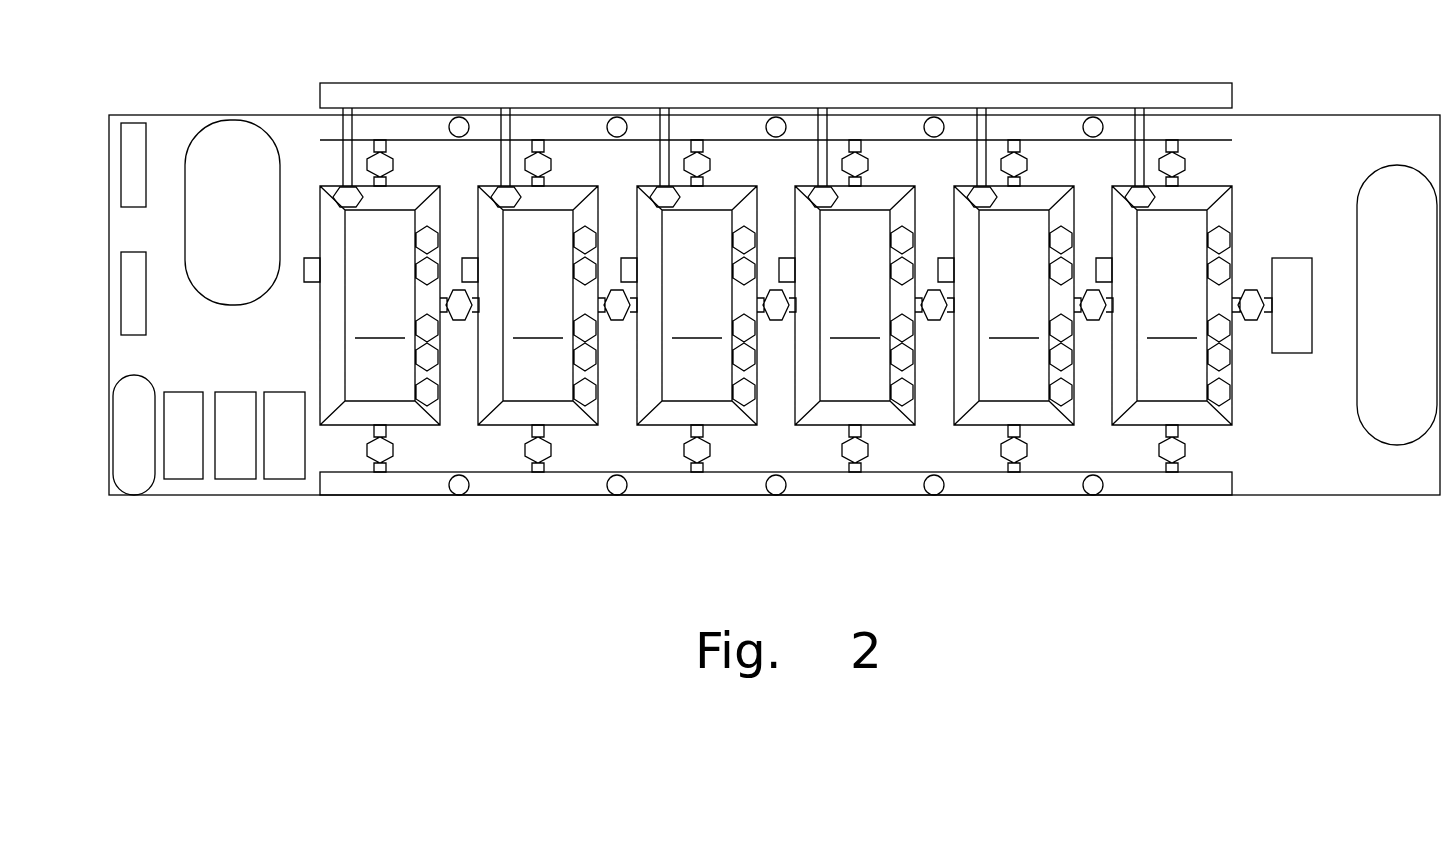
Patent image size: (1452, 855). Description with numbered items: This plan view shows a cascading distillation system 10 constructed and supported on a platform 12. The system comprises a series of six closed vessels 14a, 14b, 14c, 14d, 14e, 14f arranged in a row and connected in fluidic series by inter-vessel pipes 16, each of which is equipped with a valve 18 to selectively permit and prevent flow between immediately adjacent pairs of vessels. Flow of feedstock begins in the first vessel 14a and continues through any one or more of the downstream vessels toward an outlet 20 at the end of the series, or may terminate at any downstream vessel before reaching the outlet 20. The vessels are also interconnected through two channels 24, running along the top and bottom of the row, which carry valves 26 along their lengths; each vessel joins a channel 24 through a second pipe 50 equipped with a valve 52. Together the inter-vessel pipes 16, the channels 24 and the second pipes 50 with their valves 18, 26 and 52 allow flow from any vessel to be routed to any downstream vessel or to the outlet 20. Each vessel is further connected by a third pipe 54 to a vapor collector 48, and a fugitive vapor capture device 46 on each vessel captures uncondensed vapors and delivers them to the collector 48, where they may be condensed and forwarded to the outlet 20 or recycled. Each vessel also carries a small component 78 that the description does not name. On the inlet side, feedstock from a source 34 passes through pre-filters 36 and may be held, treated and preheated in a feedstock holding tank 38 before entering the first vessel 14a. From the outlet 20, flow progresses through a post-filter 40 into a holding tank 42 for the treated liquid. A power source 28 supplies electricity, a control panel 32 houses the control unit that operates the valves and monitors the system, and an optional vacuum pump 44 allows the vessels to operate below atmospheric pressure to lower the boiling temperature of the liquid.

The cascading distillation system 10 is at (325, 573).
The platform 12 is at (1367, 495).
The vessel 14a is at (380, 305).
The vessel 14b is at (538, 305).
The vessel 14c is at (697, 305).
The vessel 14d is at (855, 305).
The vessel 14e is at (1014, 305).
The vessel 14f is at (1172, 305).
The inter-vessel pipe 16 is at (478, 313).
The valve 18 is at (460, 302).
The outlet 20 is at (1268, 298).
The channel 24 is at (562, 113).
The valve 26 is at (459, 117).
The power source 28 is at (237, 478).
The control panel 32 is at (178, 478).
The source 34 is at (133, 492).
The pre-filter 36 is at (133, 130).
The feedstock holding tank 38 is at (212, 128).
The post-filter 40 is at (1290, 355).
The holding tank 42 is at (1392, 170).
The vacuum pump 44 is at (282, 478).
The fugitive vapor capture device 46 is at (344, 197).
The vapor collector 48 is at (398, 92).
The second pipe 50 is at (378, 140).
The valve 52 is at (372, 452).
The third pipe 54 is at (343, 130).
The sensor 78 is at (314, 270).